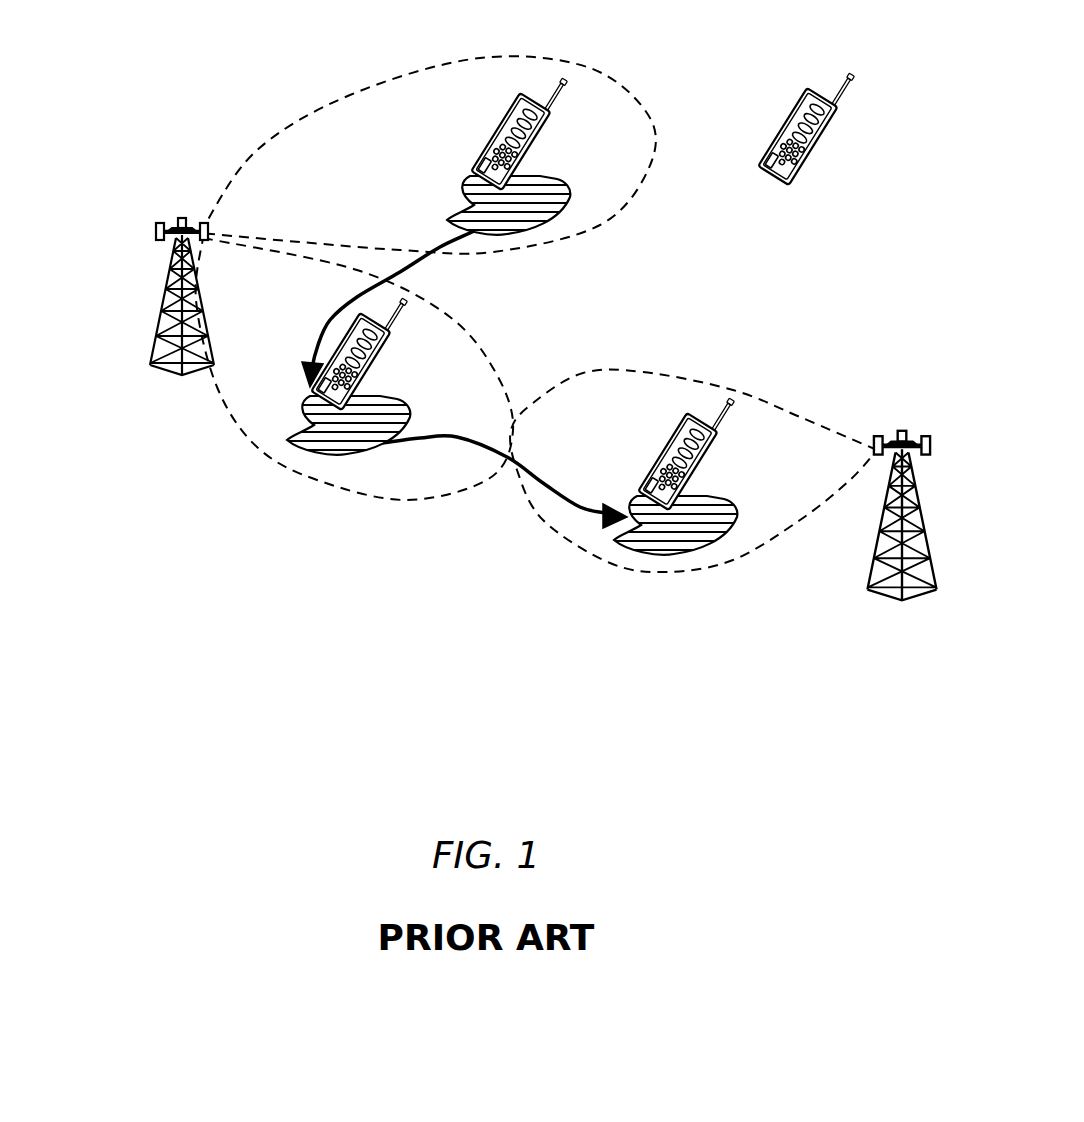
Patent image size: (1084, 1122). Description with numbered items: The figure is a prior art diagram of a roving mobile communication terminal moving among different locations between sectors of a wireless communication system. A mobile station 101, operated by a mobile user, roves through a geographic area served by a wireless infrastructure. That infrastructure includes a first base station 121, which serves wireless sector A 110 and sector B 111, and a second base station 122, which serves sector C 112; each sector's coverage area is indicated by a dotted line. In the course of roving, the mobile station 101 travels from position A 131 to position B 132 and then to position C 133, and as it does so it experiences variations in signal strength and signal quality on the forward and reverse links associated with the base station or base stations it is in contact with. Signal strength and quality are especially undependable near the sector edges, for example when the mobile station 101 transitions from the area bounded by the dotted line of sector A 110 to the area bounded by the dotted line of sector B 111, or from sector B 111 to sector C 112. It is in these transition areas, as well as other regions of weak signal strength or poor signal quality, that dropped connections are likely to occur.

The mobile station 101 is at (777, 133).
The sector A 110 is at (238, 170).
The sector B 111 is at (245, 430).
The sector C 112 is at (612, 568).
The first base station 121 is at (167, 298).
The second base station 122 is at (885, 600).
The position A 131 is at (573, 217).
The position B 132 is at (393, 400).
The position C 133 is at (717, 493).